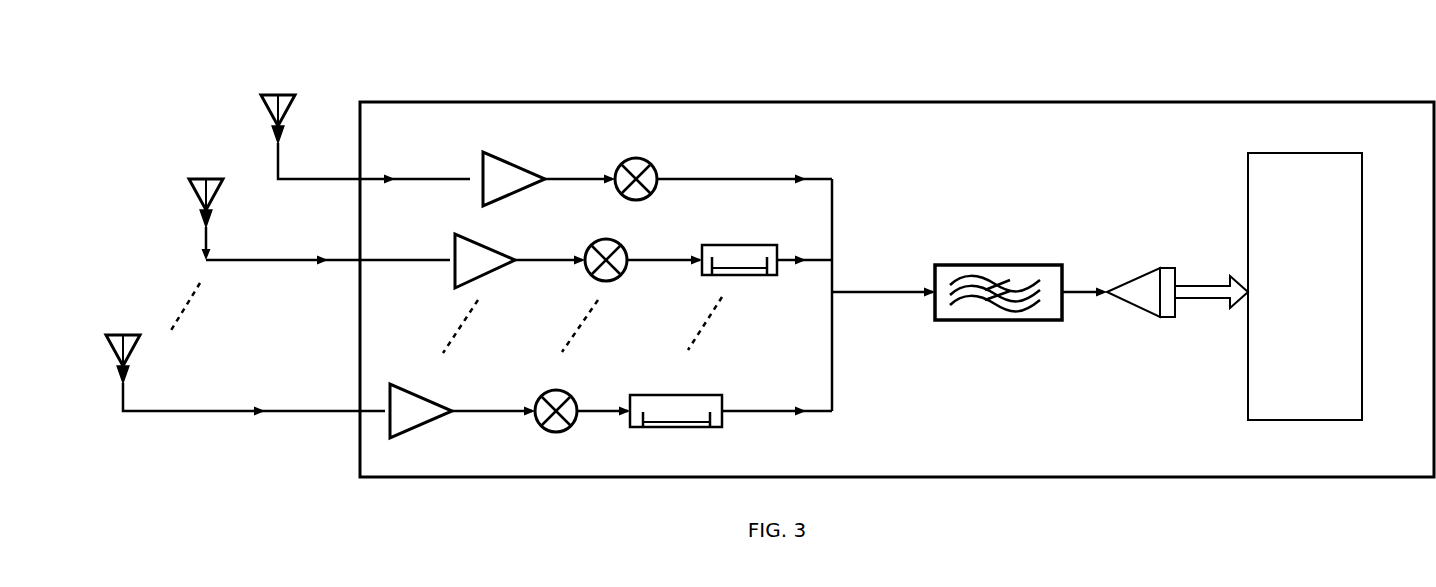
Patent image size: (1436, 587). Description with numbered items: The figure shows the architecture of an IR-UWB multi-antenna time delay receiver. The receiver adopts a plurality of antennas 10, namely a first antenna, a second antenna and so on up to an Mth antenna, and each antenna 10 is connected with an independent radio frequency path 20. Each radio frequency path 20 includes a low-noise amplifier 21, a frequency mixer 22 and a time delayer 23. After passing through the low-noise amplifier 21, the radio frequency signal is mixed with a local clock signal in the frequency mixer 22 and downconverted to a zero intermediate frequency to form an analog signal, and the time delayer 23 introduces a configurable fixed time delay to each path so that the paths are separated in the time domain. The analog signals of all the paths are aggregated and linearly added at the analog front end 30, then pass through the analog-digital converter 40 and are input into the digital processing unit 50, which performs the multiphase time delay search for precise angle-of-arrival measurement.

The antennas 10 is at (267, 107).
The radio frequency path 20 is at (373, 415).
The low-noise amplifier 21 is at (467, 282).
The frequency mixer 22 is at (596, 280).
The time delayer 23 is at (703, 325).
The analog front end 30 is at (998, 279).
The analog-digital converter 40 is at (1177, 280).
The digital processing unit 50 is at (1305, 286).